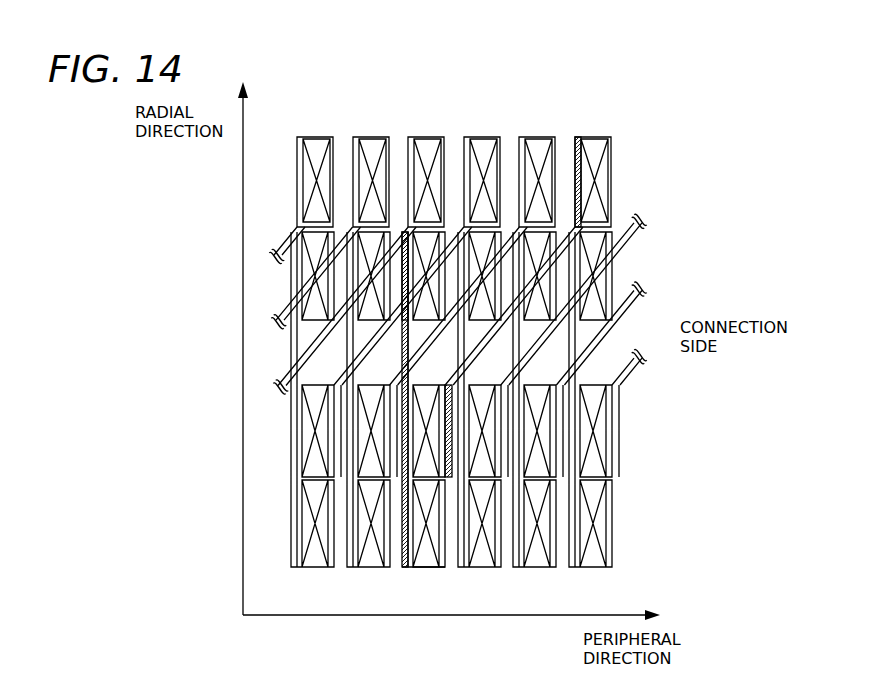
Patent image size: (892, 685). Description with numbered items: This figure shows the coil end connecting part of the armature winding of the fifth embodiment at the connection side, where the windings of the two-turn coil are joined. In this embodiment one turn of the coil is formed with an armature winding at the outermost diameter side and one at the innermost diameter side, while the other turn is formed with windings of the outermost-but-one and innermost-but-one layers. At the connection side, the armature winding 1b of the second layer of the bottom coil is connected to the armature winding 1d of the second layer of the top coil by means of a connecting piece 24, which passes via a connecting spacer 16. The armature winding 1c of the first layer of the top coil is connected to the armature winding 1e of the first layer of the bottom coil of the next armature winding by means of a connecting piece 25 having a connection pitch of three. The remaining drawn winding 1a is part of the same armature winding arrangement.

The conductor segment 1a is at (425, 139).
The armature winding of the second layer of the bottom coil 1b is at (428, 232).
The armature winding of the first layer of the top coil 1c is at (425, 470).
The armature winding of the second layer of the top coil 1d is at (420, 565).
The armature winding of the first layer of the bottom coil of the next armature wind 1e is at (595, 138).
The connecting spacer 16 is at (422, 232).
The connecting piece 24 is at (408, 243).
The connecting piece 25 is at (578, 150).